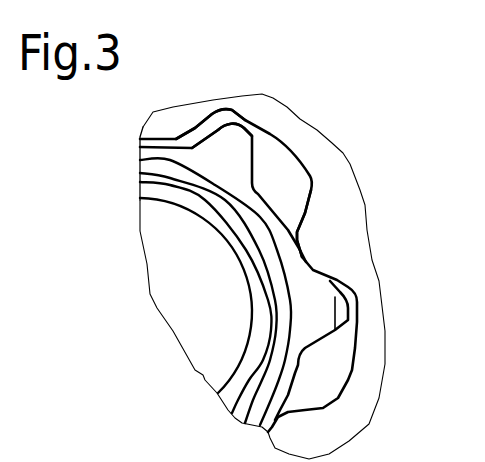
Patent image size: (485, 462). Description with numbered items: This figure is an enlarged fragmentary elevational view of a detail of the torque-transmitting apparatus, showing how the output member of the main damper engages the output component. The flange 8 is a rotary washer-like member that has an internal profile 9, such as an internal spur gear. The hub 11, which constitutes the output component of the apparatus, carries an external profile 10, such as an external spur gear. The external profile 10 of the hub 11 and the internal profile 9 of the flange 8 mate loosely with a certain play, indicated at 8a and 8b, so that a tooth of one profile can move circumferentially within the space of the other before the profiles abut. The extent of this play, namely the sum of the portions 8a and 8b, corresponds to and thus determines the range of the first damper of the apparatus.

The flange 8 is at (290, 124).
The play 8a is at (208, 130).
The play 8b is at (289, 183).
The internal profile 9 is at (312, 238).
The external profile 10 is at (322, 298).
The hub 11 is at (194, 331).